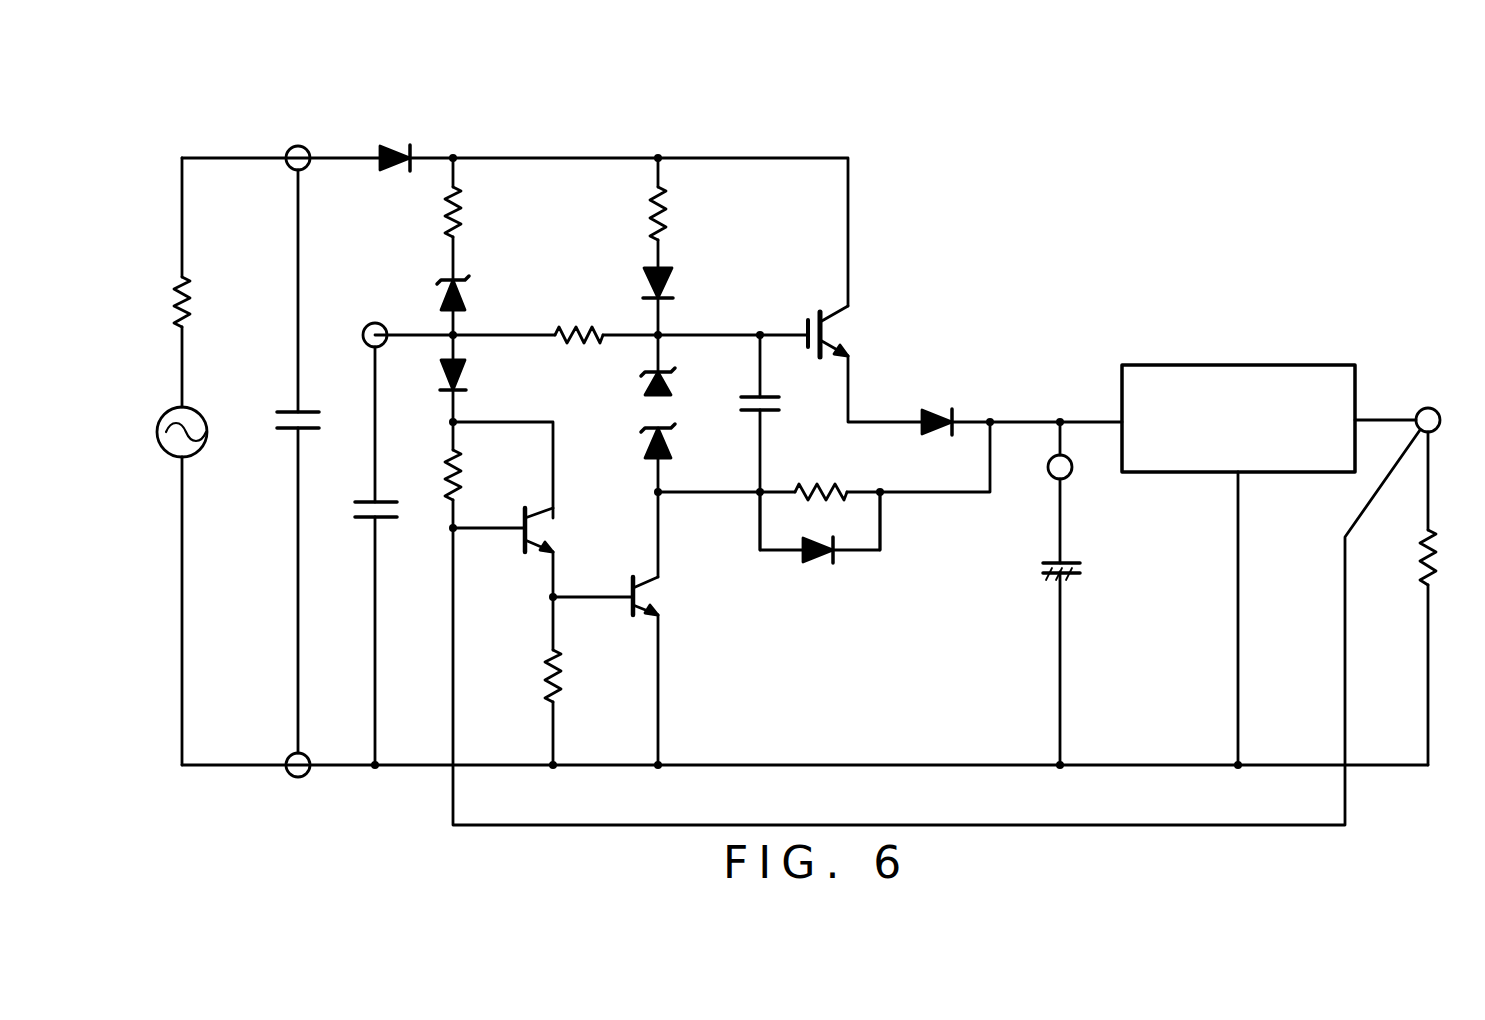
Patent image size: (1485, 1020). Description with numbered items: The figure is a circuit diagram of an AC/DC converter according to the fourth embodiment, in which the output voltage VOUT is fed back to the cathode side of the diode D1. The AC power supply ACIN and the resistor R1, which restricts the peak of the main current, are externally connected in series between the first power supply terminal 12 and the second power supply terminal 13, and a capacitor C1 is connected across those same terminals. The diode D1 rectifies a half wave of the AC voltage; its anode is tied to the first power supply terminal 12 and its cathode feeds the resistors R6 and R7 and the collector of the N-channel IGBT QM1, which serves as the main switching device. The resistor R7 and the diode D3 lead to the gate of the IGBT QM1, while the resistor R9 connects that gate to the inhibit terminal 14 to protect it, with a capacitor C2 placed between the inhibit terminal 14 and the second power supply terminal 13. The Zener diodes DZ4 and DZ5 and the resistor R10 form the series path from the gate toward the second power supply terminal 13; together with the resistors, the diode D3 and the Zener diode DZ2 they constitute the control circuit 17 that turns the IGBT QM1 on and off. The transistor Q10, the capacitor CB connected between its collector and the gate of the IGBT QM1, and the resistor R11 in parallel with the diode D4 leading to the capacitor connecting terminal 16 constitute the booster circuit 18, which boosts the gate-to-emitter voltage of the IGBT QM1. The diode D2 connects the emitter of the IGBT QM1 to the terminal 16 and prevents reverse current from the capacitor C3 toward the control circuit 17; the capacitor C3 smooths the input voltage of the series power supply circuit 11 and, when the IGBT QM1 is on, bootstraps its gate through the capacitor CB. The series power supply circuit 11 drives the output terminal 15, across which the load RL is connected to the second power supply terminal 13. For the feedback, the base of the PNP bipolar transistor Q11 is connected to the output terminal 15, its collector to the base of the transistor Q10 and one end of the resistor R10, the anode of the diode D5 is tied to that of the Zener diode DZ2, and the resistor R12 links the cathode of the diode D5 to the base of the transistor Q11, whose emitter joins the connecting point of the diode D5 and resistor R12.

The series power supply circuit 11 is at (1293, 364).
The first power supply terminal 12 is at (297, 146).
The second power supply terminal 13 is at (308, 775).
The inhibit terminal 14 is at (375, 323).
The output terminal 15 is at (1436, 430).
The capacitor connecting terminal 16 is at (1072, 468).
The control circuit 17 is at (552, 146).
The booster circuit 18 is at (836, 547).
The resistor R1 is at (172, 300).
The capacitor C1 is at (277, 418).
The capacitor C2 is at (357, 503).
The diode D1 is at (392, 146).
The resistor R6 is at (466, 212).
The Zener diode DZ2 is at (470, 297).
The diode D5 is at (466, 375).
The resistor R12 is at (466, 476).
The resistor R9 is at (578, 322).
The resistor R7 is at (648, 222).
The diode D3 is at (676, 287).
The Zener diode DZ4 is at (644, 383).
The Zener diode DZ5 is at (646, 439).
The capacitor CB is at (742, 402).
The PNP bipolar transistor Q11 is at (535, 528).
The transistor Q10 is at (658, 598).
The resistor R10 is at (566, 677).
The N-channel IGBT QM1 is at (836, 332).
The diode D2 is at (940, 408).
The resistor R11 is at (828, 486).
The diode D4 is at (816, 565).
The capacitor C3 is at (1086, 570).
The load RL is at (1438, 570).
The AC power supply ACIN is at (156, 424).
The output voltage VOUT is at (1424, 386).